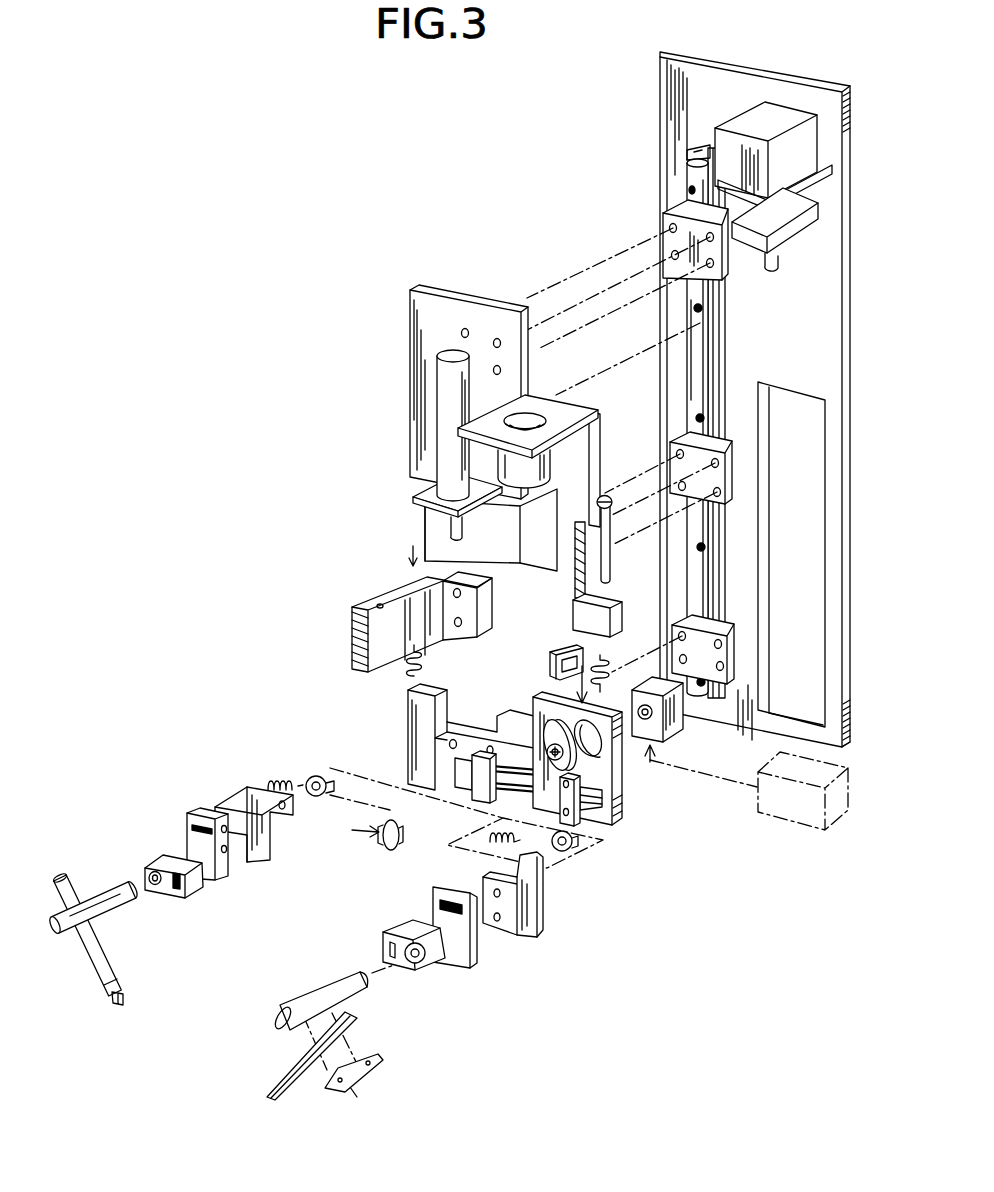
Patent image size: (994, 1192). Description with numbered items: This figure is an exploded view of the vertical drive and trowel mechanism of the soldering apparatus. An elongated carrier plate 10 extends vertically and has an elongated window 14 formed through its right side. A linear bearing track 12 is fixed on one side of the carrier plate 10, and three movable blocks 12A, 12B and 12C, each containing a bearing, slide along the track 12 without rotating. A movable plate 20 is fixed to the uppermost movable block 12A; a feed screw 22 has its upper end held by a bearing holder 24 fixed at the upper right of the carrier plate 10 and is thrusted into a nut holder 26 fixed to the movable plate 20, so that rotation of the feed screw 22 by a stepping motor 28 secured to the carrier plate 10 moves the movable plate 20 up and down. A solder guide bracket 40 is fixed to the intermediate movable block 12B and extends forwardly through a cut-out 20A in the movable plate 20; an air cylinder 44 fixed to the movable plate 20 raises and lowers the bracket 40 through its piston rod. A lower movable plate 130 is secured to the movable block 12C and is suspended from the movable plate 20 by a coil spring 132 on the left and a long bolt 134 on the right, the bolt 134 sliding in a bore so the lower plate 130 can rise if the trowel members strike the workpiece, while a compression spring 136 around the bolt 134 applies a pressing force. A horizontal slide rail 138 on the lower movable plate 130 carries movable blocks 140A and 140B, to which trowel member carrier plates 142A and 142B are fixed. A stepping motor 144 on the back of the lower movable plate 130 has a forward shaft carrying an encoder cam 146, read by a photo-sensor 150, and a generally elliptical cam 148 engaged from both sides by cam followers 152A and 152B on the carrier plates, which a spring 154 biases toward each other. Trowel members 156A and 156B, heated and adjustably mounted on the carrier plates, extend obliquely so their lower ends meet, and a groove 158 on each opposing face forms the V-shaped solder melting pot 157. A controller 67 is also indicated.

The carrier plate 10 is at (660, 106).
The linear bearing track 12 is at (688, 188).
The uppermost movable block 12A is at (663, 225).
The intermediate movable block 12B is at (679, 443).
The lower movable block 12C is at (686, 634).
The window 14 is at (775, 568).
The movable plate 20 is at (410, 364).
The cut-out 20A is at (483, 530).
The feed screw 22 is at (778, 262).
The bearing holder 24 is at (809, 232).
The nut holder 26 is at (559, 449).
The stepping motor 28 is at (800, 130).
The solder guide bracket 40 is at (363, 612).
The air cylinder 44 is at (436, 419).
The controller 67 is at (795, 828).
The lower movable plate 130 is at (408, 742).
The coil spring 132 is at (411, 666).
The long bolt 134 is at (607, 552).
The compression spring 136 is at (610, 661).
The slide rail 138 is at (602, 803).
The movable block 140A is at (478, 750).
The movable block 140B is at (580, 770).
The trowel member carrier plate 142A is at (230, 806).
The trowel member carrier plate 142B is at (545, 913).
The stepping motor 144 is at (683, 727).
The encoder cam 146 is at (547, 750).
The cam 148 is at (387, 862).
The photo-sensor 150 is at (562, 652).
The cam follower 152A is at (316, 774).
The cam follower 152B is at (576, 850).
The spring 154 is at (494, 840).
The trowel member 156A is at (105, 993).
The trowel member 156B is at (276, 1071).
The solder melting pot 157 is at (243, 1067).
The groove 158 is at (125, 998).